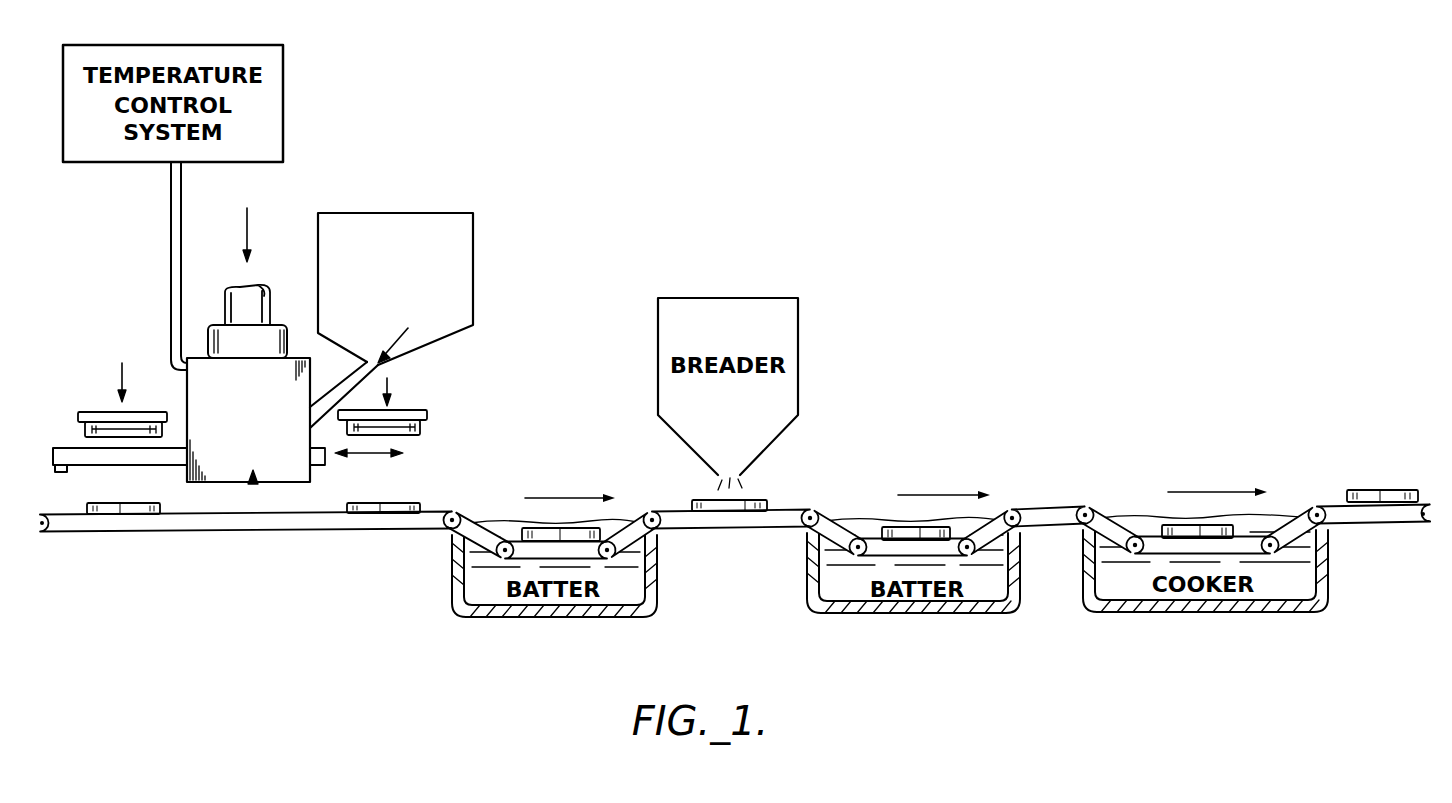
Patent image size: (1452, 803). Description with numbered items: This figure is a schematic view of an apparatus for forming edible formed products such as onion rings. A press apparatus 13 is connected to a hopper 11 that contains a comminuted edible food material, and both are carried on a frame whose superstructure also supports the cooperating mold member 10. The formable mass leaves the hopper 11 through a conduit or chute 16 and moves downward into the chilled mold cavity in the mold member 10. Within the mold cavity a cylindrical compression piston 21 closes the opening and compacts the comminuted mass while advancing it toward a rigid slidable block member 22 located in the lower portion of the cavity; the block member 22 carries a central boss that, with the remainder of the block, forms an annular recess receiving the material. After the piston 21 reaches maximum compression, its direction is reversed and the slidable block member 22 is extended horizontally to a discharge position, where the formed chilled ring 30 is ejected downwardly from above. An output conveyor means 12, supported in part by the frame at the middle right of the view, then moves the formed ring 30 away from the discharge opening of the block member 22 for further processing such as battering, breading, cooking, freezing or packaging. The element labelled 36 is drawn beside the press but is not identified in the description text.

The mold member 10 is at (200, 357).
The hopper 11 is at (477, 262).
The output conveyor means 12 is at (447, 512).
The press apparatus 13 is at (254, 484).
The conduit or chute 16 is at (353, 372).
The compression piston 21 is at (273, 320).
The slidable block member 22 is at (162, 462).
The formed chilled ring 30 is at (141, 516).
The pressed product 36 is at (97, 410).